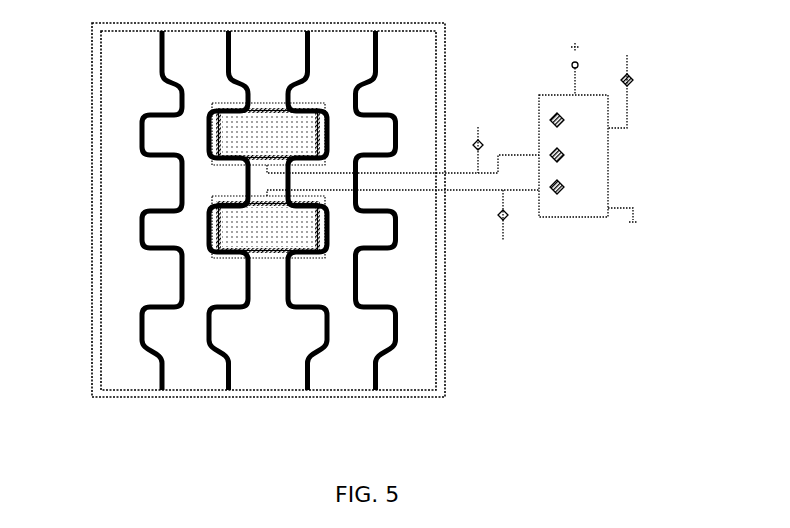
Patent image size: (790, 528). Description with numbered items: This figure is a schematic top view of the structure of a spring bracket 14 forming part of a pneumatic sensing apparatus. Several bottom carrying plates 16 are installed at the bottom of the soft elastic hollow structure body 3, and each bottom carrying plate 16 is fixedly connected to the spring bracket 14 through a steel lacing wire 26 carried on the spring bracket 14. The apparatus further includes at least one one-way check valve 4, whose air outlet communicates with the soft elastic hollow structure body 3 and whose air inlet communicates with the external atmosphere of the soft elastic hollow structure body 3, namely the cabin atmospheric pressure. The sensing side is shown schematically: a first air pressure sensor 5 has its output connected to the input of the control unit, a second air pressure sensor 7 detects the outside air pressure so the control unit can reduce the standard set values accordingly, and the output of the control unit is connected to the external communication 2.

The spring bracket 14 is at (102, 46).
The steel lacing wire 26 is at (142, 117).
The bottom carrying plate 16 is at (203, 133).
The soft elastic hollow structure body 3 is at (205, 220).
The second air pressure sensor 7 is at (551, 115).
The first air pressure sensor 5 is at (592, 254).
The one-way check valve 4 is at (483, 141).
The external communication 2 is at (631, 77).